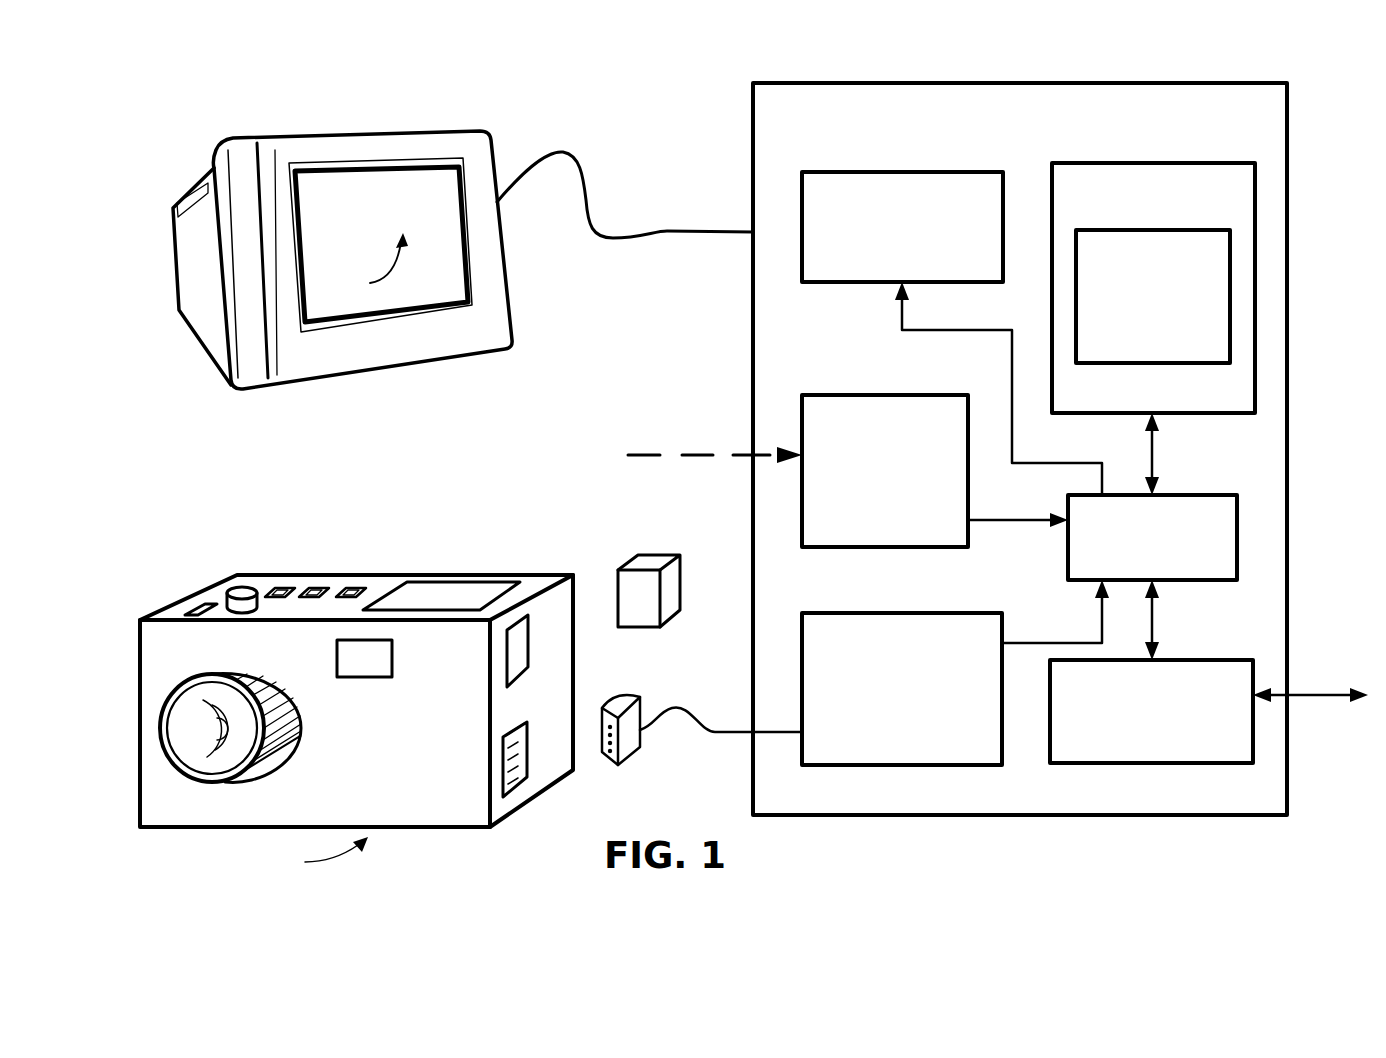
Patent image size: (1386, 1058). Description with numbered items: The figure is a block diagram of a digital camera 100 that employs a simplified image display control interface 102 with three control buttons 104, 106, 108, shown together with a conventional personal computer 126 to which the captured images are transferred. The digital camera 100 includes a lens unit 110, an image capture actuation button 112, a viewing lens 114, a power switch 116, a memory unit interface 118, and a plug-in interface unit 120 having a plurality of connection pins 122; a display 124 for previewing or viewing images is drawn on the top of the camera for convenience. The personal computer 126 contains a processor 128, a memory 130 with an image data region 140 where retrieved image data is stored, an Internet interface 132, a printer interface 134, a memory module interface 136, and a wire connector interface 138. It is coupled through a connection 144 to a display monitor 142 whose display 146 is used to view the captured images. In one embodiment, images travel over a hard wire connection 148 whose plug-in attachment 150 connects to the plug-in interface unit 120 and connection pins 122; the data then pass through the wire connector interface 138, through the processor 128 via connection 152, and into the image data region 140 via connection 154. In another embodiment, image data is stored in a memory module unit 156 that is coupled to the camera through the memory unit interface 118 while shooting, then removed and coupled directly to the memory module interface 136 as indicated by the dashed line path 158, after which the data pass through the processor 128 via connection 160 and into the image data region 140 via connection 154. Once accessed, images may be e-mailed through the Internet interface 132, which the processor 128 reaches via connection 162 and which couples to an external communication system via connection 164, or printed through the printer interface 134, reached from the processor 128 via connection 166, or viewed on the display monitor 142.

The digital camera 100 is at (312, 857).
The image display control interface 102 is at (432, 543).
The control button 104 is at (275, 587).
The control button 106 is at (312, 587).
The control button 108 is at (348, 587).
The lens unit 110 is at (228, 676).
The image capture actuation button 112 is at (242, 586).
The viewing lens 114 is at (365, 677).
The power switch 116 is at (212, 603).
The memory unit interface 118 is at (507, 638).
The plug-in interface unit 120 is at (505, 790).
The connection pins 122 is at (525, 750).
The display 124 is at (445, 597).
The personal computer 126 is at (1020, 449).
The processor 128 is at (1152, 537).
The memory 130 is at (1153, 288).
The Internet interface 132 is at (1151, 711).
The printer interface 134 is at (902, 227).
The memory module interface 136 is at (885, 471).
The wire connector interface 138 is at (902, 689).
The image data region 140 is at (1153, 296).
The display monitor 142 is at (270, 392).
The connection 144 is at (698, 233).
The display 146 is at (367, 264).
The hard wire connection 148 is at (718, 735).
The plug-in attachment 150 is at (625, 710).
The connection 152 is at (1037, 640).
The connection 154 is at (1158, 447).
The memory module unit 156 is at (628, 556).
The dashed line path 158 is at (703, 452).
The connection 160 is at (983, 520).
The connection 162 is at (1155, 612).
The connection 164 is at (1305, 695).
The connection 166 is at (955, 332).